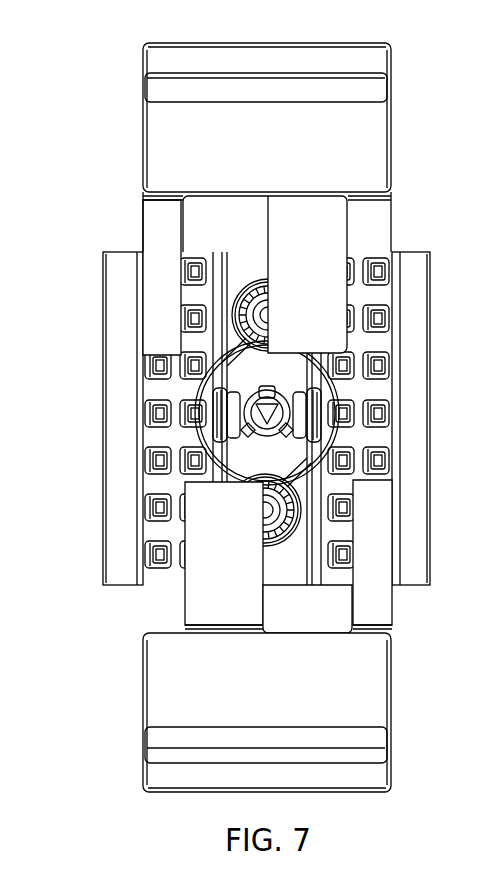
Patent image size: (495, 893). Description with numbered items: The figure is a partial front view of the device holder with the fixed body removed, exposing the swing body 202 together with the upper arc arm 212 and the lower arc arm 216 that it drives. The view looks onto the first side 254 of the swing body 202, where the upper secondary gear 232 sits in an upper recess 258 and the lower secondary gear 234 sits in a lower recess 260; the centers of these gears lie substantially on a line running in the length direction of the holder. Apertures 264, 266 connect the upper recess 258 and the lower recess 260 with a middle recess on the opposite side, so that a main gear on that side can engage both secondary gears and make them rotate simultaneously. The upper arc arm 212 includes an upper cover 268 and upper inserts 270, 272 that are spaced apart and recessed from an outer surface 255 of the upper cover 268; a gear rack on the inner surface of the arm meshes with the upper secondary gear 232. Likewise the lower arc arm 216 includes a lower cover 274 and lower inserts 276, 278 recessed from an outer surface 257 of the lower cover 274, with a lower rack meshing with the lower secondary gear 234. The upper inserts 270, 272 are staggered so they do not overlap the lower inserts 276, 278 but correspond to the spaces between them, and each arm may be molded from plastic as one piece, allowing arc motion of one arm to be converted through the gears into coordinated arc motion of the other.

The swing body 202 is at (432, 394).
The upper arc arm 212 is at (388, 105).
The lower arc arm 216 is at (395, 709).
The upper secondary gear 232 is at (267, 283).
The lower secondary gear 234 is at (290, 500).
The first side 254 is at (150, 390).
The outer surface 255 is at (259, 117).
The outer surface 257 is at (299, 712).
The upper recess 258 is at (230, 314).
The lower recess 260 is at (300, 518).
The aperture 264 is at (259, 343).
The aperture 266 is at (280, 482).
The upper cover 268 is at (265, 147).
The upper insert 270 is at (157, 219).
The upper insert 272 is at (340, 220).
The lower cover 274 is at (268, 708).
The lower insert 276 is at (197, 609).
The lower insert 278 is at (377, 603).